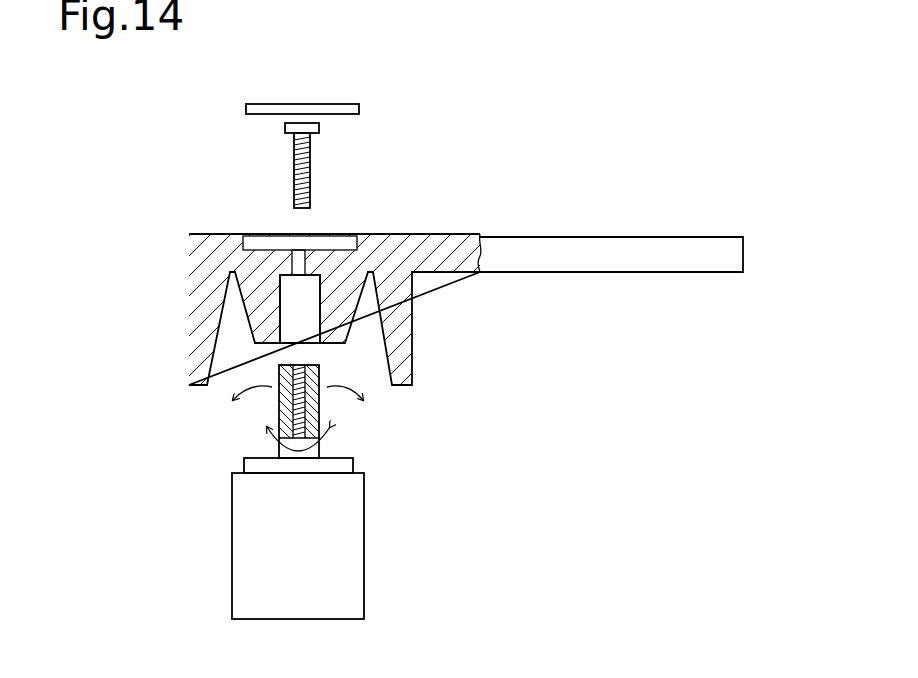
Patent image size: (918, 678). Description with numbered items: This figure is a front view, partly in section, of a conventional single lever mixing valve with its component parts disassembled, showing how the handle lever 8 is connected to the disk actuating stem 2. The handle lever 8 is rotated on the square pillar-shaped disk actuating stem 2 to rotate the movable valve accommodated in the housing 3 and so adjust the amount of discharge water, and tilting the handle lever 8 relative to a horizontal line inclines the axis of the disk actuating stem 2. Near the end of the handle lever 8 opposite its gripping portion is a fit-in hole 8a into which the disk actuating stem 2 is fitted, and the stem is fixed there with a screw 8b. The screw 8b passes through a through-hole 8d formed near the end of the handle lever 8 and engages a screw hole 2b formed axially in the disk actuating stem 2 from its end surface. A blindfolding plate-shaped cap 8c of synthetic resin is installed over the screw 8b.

The handle lever 8 is at (600, 255).
The fit-in hole 8a is at (313, 305).
The screw 8b is at (312, 166).
The blindfolding plate-shaped cap 8c is at (337, 105).
The through-hole 8d is at (300, 252).
The disk actuating stem 2 is at (313, 410).
The screw hole 2b is at (295, 365).
The housing 3 is at (342, 560).